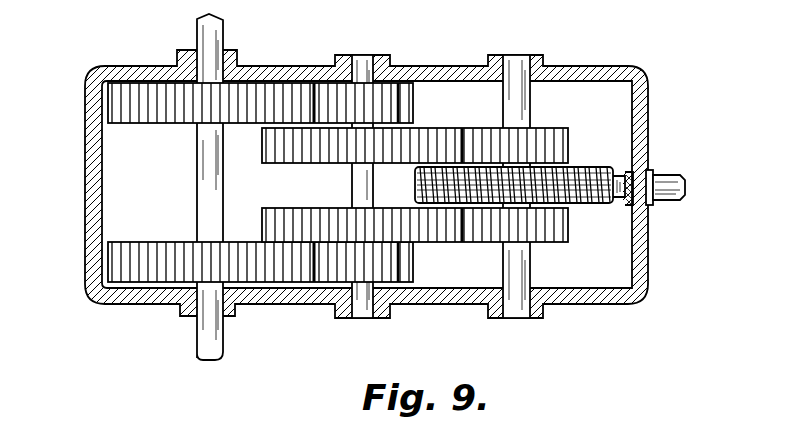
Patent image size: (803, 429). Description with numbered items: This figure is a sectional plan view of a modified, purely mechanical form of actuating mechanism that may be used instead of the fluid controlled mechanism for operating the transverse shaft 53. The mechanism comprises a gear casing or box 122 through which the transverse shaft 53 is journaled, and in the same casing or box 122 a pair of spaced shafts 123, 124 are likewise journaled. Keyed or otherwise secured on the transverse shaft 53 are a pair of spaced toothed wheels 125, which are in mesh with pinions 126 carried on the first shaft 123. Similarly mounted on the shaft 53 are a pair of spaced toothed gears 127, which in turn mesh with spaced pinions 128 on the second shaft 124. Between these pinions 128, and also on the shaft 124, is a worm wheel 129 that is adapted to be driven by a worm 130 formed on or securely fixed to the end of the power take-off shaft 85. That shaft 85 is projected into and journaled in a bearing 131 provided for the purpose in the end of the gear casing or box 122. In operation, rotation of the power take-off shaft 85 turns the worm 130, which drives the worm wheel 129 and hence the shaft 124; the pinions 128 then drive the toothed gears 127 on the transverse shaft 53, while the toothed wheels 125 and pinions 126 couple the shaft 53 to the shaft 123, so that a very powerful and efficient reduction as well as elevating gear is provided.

The gear casing or box 122 is at (85, 188).
The transverse shaft 53 is at (223, 342).
The shaft 123 is at (352, 182).
The shaft 124 is at (530, 268).
The toothed wheels 125 is at (138, 124).
The pinions 126 is at (405, 103).
The toothed gears 127 is at (262, 147).
The pinions 128 is at (562, 128).
The worm wheel 129 is at (578, 167).
The worm 130 is at (578, 204).
The bearing 131 is at (650, 206).
The power take-off shaft 85 is at (684, 188).